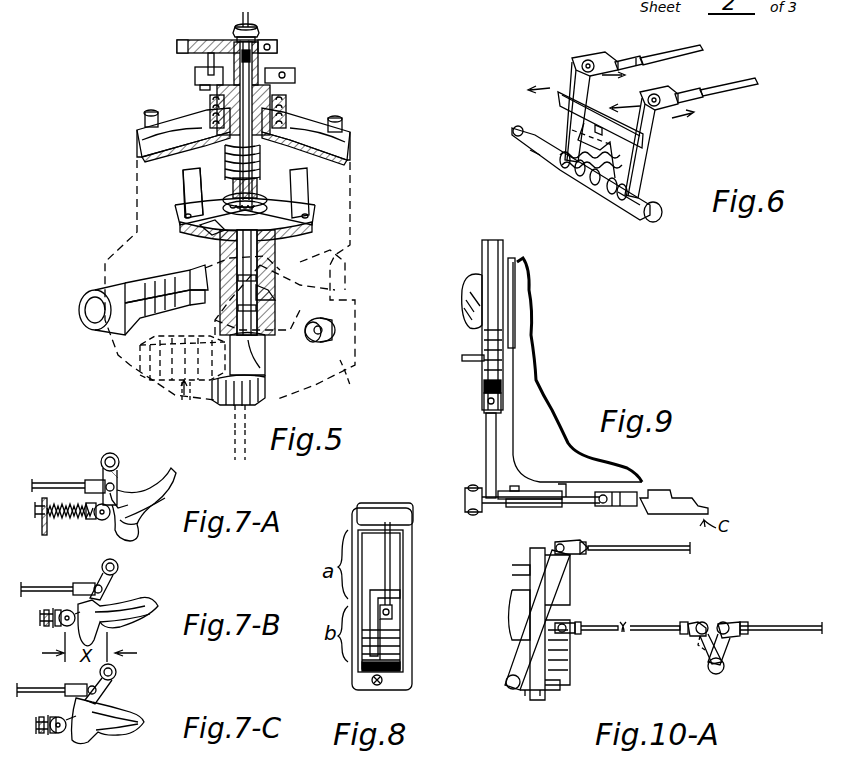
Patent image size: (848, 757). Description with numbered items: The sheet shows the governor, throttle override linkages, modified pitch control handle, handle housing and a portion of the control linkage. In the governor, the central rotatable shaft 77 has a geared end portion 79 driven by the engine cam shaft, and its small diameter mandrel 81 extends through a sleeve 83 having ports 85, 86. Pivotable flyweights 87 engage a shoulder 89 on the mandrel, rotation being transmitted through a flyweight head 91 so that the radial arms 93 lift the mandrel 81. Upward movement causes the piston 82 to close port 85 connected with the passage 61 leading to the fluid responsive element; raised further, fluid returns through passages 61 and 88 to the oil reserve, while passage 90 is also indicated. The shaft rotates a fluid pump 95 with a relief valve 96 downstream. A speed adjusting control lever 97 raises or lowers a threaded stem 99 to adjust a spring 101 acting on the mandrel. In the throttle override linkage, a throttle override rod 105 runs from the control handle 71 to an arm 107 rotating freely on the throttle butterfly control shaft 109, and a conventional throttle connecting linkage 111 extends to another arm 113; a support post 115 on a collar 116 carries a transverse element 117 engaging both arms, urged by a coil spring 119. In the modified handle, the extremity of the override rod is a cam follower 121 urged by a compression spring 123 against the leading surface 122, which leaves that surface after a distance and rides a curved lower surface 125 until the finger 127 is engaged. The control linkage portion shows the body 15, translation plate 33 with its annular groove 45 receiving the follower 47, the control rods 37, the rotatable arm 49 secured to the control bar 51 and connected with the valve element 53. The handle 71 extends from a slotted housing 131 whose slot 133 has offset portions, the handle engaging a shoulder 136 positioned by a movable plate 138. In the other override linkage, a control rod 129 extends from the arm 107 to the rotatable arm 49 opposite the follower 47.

In FIG. 5, the speed adjusting control lever 97 is at (205, 42).
In FIG. 5, the threaded stem 99 is at (280, 92).
In FIG. 5, the spring 101 is at (258, 158).
In FIG. 5, the flyweights 87 is at (305, 184).
In FIG. 5, the shoulder 89 is at (262, 215).
In FIG. 5, the flyweight head 91 is at (312, 230).
In FIG. 5, the radial arms 93 is at (212, 232).
In FIG. 5, the mandrel 81 is at (258, 264).
In FIG. 5, the sleeve 83 is at (270, 291).
In FIG. 5, the port 86 is at (210, 275).
In FIG. 5, the port 85 is at (325, 290).
In FIG. 5, the relief valve 96 is at (148, 286).
In FIG. 5, the fluid pump 95 is at (135, 375).
In FIG. 5, the piston 82 is at (262, 365).
In FIG. 5, the central rotatable shaft 77 is at (258, 395).
In FIG. 5, the passage 61 is at (328, 368).
In FIG. 5, the direction arrow 90 is at (180, 418).
In FIG. 5, the geared end portion 79 is at (234, 432).
In FIG. 5, the passage 88 is at (232, 456).
In FIG. 6, the throttle override rod 105 is at (680, 44).
In FIG. 7-A, the throttle override rod 105 is at (98, 520).
In FIG. 6, the arm 107 is at (574, 74).
In FIG. 10-A, the arm 107 is at (725, 640).
In FIG. 6, the conventional throttle connecting linkage 111 is at (736, 88).
In FIG. 6, the arm 113 is at (652, 130).
In FIG. 10-A, the arm 113 is at (724, 658).
In FIG. 6, the transverse element 117 is at (560, 105).
In FIG. 6, the throttle butterfly control shaft 109 is at (533, 150).
In FIG. 6, the support post 115 is at (580, 180).
In FIG. 6, the collar 116 is at (600, 195).
In FIG. 6, the coil spring 119 is at (607, 212).
In FIG. 9, the annular groove 45 is at (486, 256).
In FIG. 9, the body 15 is at (466, 292).
In FIG. 9, the translation plate 33 is at (480, 338).
In FIG. 9, the control rods 37 is at (466, 362).
In FIG. 9, the follower 47 is at (482, 398).
In FIG. 10-A, the follower 47 is at (512, 600).
In FIG. 9, the valve element 53 is at (640, 508).
In FIG. 7-A, the control handle 71 is at (102, 466).
In FIG. 7-B, the control handle 71 is at (116, 574).
In FIG. 7-C, the control handle 71 is at (100, 684).
In FIG. 8, the control handle 71 is at (403, 528).
In FIG. 7-A, the control bar 51 is at (92, 478).
In FIG. 7-B, the control bar 51 is at (94, 584).
In FIG. 7-C, the control bar 51 is at (88, 686).
In FIG. 7-A, the compression spring 123 is at (64, 508).
In FIG. 7-A, the leading surface 122 is at (120, 472).
In FIG. 7-B, the leading surface 122 is at (73, 596).
In FIG. 7-C, the leading surface 122 is at (65, 688).
In FIG. 7-A, the cam follower 121 is at (116, 490).
In FIG. 7-B, the cam follower 121 is at (100, 596).
In FIG. 7-C, the cam follower 121 is at (66, 712).
In FIG. 7-A, the curved lower surface 125 is at (140, 535).
In FIG. 7-B, the curved lower surface 125 is at (112, 632).
In FIG. 7-C, the curved lower surface 125 is at (100, 712).
In FIG. 7-A, the finger 127 is at (160, 502).
In FIG. 7-B, the finger 127 is at (120, 645).
In FIG. 7-C, the finger 127 is at (100, 728).
In FIG. 8, the slot 133 is at (380, 593).
In FIG. 8, the shoulder 136 is at (392, 610).
In FIG. 8, the movable plate 138 is at (394, 622).
In FIG. 8, the slotted housing 131 is at (398, 653).
In FIG. 10-A, the rotatable arm 49 is at (508, 660).
In FIG. 10-A, the control rod 129 is at (660, 622).